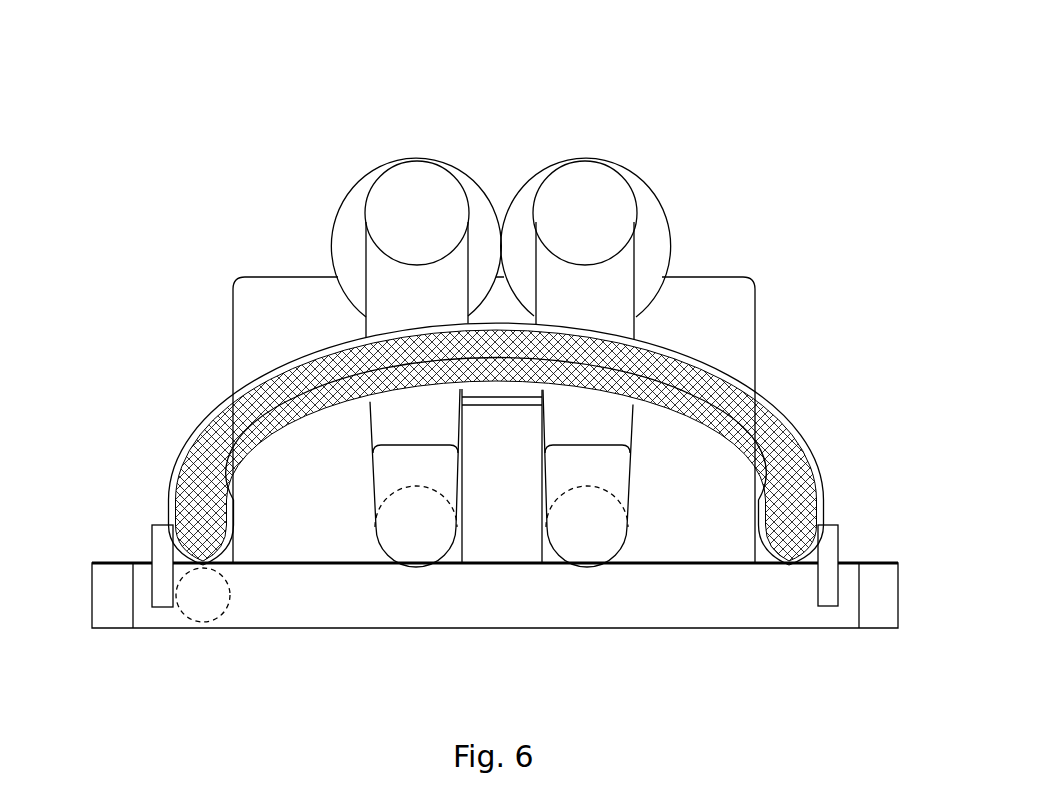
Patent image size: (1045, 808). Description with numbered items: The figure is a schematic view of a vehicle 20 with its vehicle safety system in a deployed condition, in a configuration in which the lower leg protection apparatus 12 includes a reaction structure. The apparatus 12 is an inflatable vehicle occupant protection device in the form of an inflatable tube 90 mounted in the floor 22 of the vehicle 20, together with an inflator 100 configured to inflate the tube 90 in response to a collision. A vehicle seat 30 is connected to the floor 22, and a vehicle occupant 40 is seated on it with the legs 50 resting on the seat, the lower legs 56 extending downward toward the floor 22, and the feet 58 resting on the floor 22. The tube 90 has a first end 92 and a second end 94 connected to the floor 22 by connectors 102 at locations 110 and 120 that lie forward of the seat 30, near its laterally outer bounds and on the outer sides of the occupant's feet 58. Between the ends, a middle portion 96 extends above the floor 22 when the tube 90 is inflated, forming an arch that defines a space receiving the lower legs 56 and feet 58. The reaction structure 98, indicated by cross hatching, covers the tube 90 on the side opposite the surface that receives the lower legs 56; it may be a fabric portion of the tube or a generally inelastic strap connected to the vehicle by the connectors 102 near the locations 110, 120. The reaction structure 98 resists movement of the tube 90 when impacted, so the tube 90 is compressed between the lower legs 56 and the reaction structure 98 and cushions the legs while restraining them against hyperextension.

The vehicle 20 is at (254, 119).
The floor 22 is at (725, 617).
The vehicle seat 30 is at (312, 296).
The vehicle occupant 40 is at (674, 134).
The legs 50 is at (333, 218).
The lower legs 56 is at (405, 302).
The feet 58 is at (585, 472).
The lower leg protection apparatus 12 is at (792, 409).
The inflatable tube 90 is at (722, 368).
The first end 92 is at (190, 468).
The second end 94 is at (830, 472).
The middle portion 96 is at (507, 330).
The reaction structure 98 is at (263, 418).
The inflator 100 is at (222, 614).
The connectors 102 is at (160, 548).
The location 110 is at (203, 563).
The location 120 is at (787, 566).